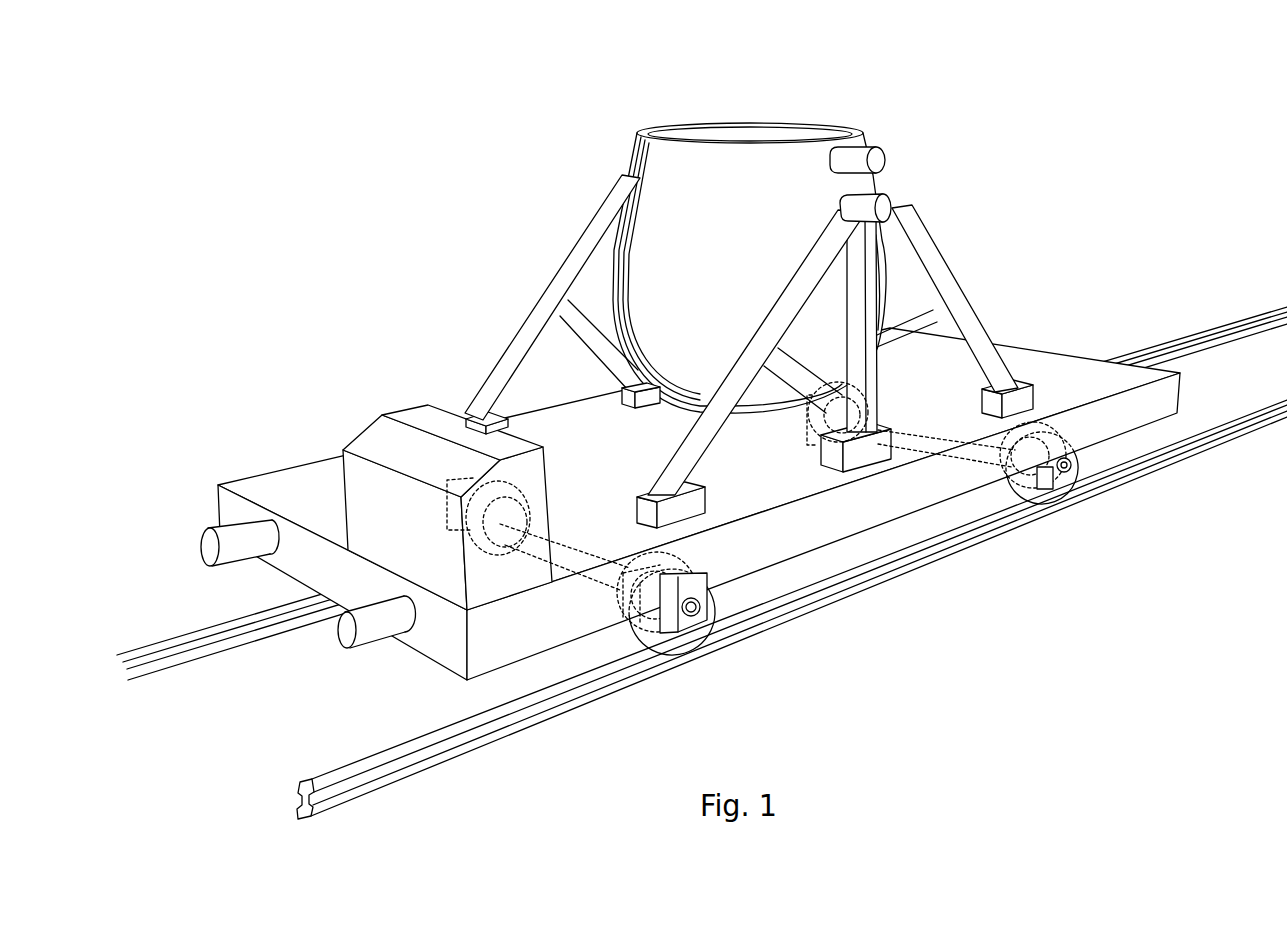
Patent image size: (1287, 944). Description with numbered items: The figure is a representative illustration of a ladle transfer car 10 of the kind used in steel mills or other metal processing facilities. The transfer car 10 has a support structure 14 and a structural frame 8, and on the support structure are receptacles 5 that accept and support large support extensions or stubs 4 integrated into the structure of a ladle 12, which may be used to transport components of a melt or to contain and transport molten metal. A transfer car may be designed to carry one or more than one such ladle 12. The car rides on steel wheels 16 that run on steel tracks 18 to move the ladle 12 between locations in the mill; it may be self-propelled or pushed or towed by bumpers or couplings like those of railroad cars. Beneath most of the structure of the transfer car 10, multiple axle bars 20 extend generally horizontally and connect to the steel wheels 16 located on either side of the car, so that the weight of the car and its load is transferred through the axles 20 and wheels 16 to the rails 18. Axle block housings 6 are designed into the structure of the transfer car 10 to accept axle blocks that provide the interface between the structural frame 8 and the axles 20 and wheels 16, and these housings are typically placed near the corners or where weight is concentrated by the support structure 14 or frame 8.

The transfer car 10 is at (342, 328).
The ladle 12 is at (677, 128).
The support extensions or stubs 4 is at (886, 200).
The receptacles 5 is at (846, 200).
The support structure 14 is at (960, 302).
The structural frame 8 is at (950, 477).
The tracks 18 is at (865, 588).
The axle block housings 6 is at (657, 645).
The steel wheels 16 is at (690, 652).
The axle bars 20 is at (706, 609).